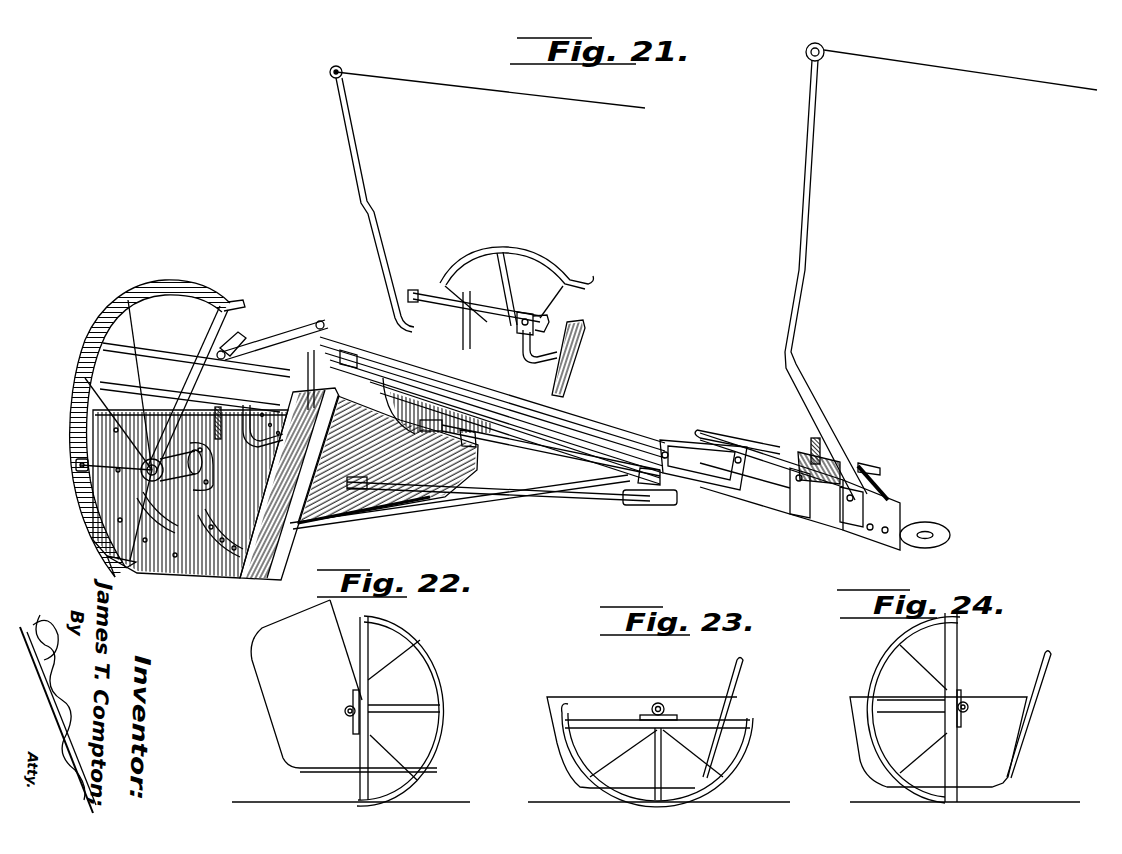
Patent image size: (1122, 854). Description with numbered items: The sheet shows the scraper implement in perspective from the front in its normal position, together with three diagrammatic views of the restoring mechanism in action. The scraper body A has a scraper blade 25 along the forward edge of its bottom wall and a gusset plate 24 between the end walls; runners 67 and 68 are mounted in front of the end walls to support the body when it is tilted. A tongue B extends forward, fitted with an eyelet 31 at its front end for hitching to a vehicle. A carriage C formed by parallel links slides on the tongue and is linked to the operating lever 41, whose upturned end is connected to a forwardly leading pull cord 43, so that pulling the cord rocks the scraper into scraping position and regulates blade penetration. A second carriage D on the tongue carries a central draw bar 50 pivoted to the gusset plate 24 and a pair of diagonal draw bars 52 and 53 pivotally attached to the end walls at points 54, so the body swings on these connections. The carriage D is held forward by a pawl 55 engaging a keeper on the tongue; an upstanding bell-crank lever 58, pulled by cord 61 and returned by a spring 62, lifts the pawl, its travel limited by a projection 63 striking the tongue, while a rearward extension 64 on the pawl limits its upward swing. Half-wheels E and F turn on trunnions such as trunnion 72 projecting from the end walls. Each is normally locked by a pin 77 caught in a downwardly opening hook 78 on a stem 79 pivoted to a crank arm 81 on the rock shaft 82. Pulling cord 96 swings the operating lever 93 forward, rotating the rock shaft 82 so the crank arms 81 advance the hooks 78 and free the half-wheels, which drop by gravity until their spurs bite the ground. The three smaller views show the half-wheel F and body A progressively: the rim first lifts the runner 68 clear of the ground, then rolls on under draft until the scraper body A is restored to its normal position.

In FIG. 21, the operating lever 41 is at (358, 160).
In FIG. 21, the pull cord 43 is at (502, 92).
In FIG. 21, the bell-crank lever 58 is at (797, 202).
In FIG. 21, the pull cord 61 is at (968, 73).
In FIG. 21, the eyelet 31 is at (950, 538).
In FIG. 21, the scraper blade 25 is at (447, 465).
In FIG. 21, the gusset plate 24 is at (325, 437).
In FIG. 21, the runner 68 is at (262, 555).
In FIG. 22, the runner 68 is at (423, 768).
In FIG. 23, the runner 68 is at (739, 680).
In FIG. 24, the runner 68 is at (1046, 678).
In FIG. 22, the trunnion 72 is at (344, 711).
In FIG. 23, the trunnion 72 is at (658, 703).
In FIG. 24, the trunnion 72 is at (967, 700).
In FIG. 21, the operating lever 93 is at (224, 348).
In FIG. 21, the pull cord 96 is at (322, 323).
In FIG. 21, the rock shaft 82 is at (330, 360).
In FIG. 21, the crank arm 81 is at (413, 295).
In FIG. 21, the stem 79 is at (483, 313).
In FIG. 21, the hook 78 is at (522, 312).
In FIG. 21, the pin 77 is at (549, 316).
In FIG. 21, the runner 67 is at (580, 345).
In FIG. 21, the rearward extension 64 is at (717, 433).
In FIG. 21, the spring 62 is at (815, 443).
In FIG. 21, the pawl 55 is at (868, 463).
In FIG. 21, the projection 63 is at (885, 487).
In FIG. 21, the pivotal attachment 54 is at (475, 440).
In FIG. 21, the draw bar 52 is at (558, 450).
In FIG. 21, the draw bar 53 is at (497, 493).
In FIG. 21, the draw bar 50 is at (592, 492).
In FIG. 21, the scraper body A is at (100, 430).
In FIG. 22, the scraper body A is at (243, 644).
In FIG. 23, the scraper body A is at (538, 702).
In FIG. 24, the scraper body A is at (853, 753).
In FIG. 21, the tongue B is at (612, 397).
In FIG. 21, the carriage C is at (368, 340).
In FIG. 21, the carriage D is at (683, 440).
In FIG. 21, the half-wheel E is at (517, 235).
In FIG. 21, the half-wheel F is at (110, 295).
In FIG. 22, the half-wheel F is at (451, 639).
In FIG. 23, the half-wheel F is at (572, 752).
In FIG. 24, the half-wheel F is at (886, 646).